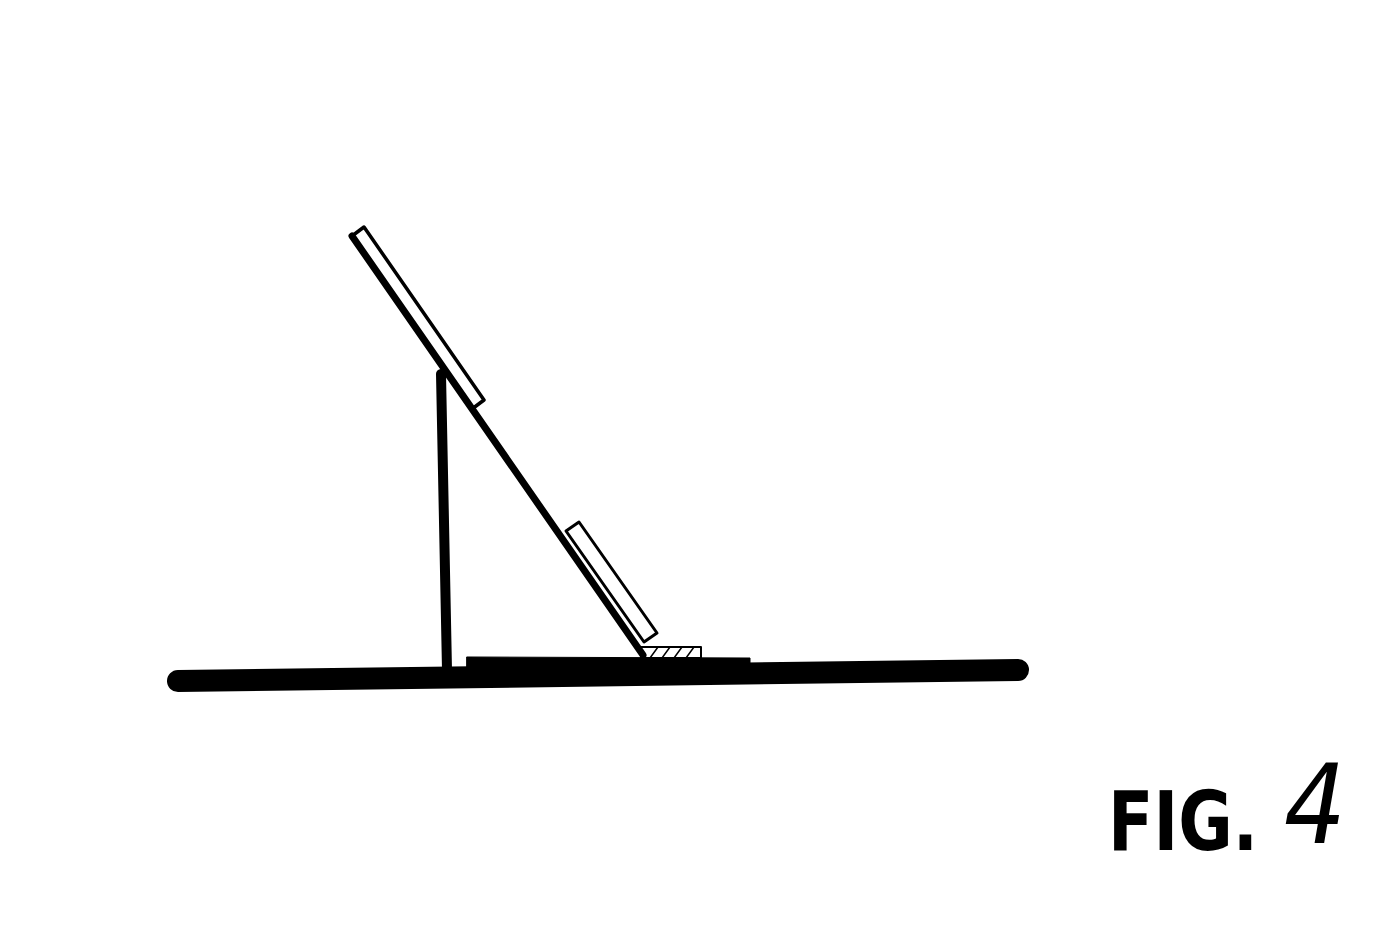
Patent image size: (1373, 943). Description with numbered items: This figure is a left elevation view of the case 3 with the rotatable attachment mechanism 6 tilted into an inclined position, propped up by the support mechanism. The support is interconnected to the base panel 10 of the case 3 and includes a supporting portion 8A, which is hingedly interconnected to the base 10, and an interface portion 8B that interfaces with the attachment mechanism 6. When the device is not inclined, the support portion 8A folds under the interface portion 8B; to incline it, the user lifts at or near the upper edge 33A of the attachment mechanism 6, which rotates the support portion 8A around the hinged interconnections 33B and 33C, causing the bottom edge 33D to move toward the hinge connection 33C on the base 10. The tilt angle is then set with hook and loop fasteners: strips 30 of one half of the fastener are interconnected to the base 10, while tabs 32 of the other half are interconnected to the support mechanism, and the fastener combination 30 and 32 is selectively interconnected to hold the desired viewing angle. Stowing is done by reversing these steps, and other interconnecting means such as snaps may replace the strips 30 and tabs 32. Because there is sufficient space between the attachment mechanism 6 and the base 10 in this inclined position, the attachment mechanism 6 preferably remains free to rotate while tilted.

The case 3 is at (158, 183).
The rotatable attachment mechanism 6 is at (542, 505).
The supporting portion 8A is at (440, 520).
The interface portion of the support 8B is at (415, 330).
The base panel 10 is at (993, 663).
The strips of hook and loop fastener 30 is at (750, 657).
The tabs of hook and loop fastener 32 is at (693, 647).
The upper edge of the attachment mechanism 33A is at (333, 270).
The hinged interconnection 33B is at (413, 390).
The hinge connection on the base 33C is at (458, 653).
The bottom edge 33D is at (700, 725).